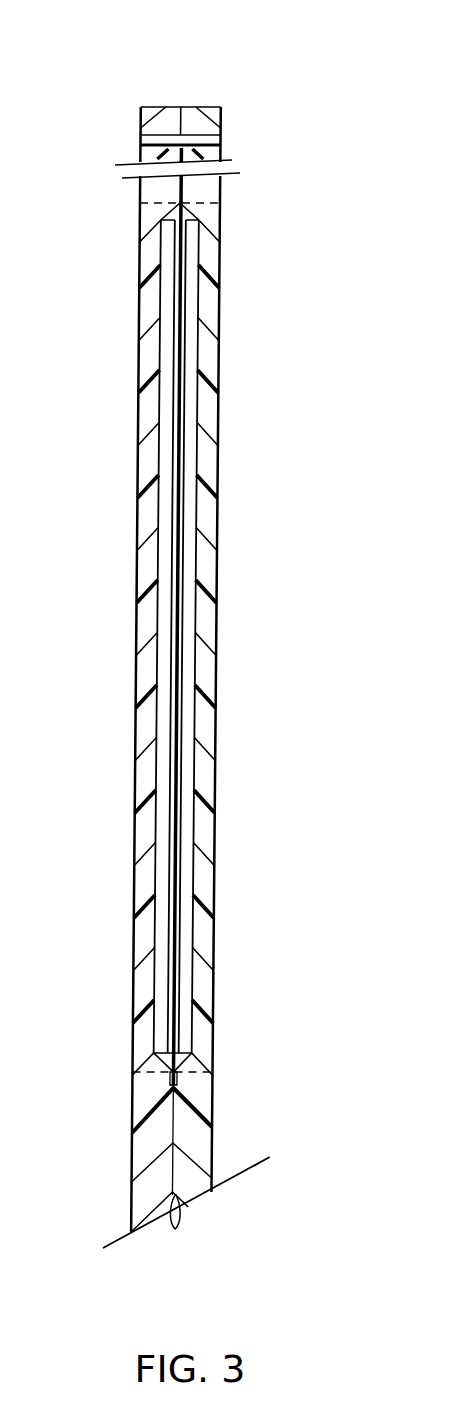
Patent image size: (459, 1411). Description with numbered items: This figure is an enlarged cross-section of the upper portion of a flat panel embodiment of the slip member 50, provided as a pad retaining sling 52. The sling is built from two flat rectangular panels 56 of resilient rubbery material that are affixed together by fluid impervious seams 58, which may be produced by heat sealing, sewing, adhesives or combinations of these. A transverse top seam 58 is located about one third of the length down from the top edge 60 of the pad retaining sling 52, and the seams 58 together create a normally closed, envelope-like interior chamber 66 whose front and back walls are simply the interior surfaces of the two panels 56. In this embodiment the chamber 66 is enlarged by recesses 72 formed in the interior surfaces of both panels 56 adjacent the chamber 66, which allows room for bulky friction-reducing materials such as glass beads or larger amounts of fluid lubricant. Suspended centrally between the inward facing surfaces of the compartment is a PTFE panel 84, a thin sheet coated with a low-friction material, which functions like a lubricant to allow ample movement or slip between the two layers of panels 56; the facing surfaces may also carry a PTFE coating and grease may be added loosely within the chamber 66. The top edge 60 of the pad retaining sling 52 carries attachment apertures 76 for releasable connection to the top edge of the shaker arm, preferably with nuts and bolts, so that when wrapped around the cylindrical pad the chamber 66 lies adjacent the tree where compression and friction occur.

The slip member 50 is at (215, 107).
The pad retaining sling 52 is at (140, 390).
The flat rectangular panels 56 is at (218, 390).
The fluid impervious seams 58 is at (192, 205).
The top edge 60 is at (190, 107).
The interior chamber 66 is at (163, 750).
The recesses 72 is at (160, 1046).
The attachment apertures 76 is at (215, 144).
The PTFE panel 84 is at (180, 620).